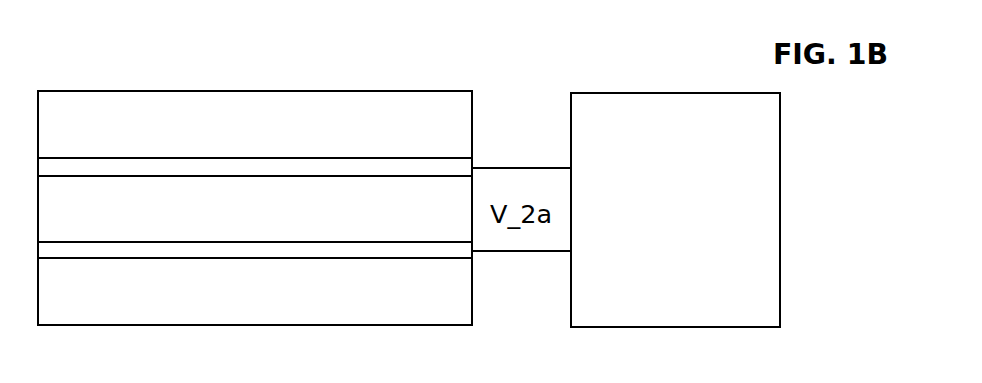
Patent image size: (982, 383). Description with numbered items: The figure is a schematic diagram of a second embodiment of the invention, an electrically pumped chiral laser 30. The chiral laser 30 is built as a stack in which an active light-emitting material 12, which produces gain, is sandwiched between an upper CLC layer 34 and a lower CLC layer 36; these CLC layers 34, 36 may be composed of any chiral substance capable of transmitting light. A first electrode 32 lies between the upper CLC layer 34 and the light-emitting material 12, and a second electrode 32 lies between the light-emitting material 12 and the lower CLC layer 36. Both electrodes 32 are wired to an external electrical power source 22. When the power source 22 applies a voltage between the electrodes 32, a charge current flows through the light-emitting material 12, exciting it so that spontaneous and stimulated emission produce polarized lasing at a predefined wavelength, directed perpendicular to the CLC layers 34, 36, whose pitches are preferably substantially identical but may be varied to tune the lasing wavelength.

The light-emitting material 12 is at (155, 209).
The power source 22 is at (780, 260).
The chiral laser 30 is at (521, 70).
The electrode 32 is at (405, 170).
The upper CLC layer 34 is at (472, 127).
The lower CLC layer 36 is at (472, 294).